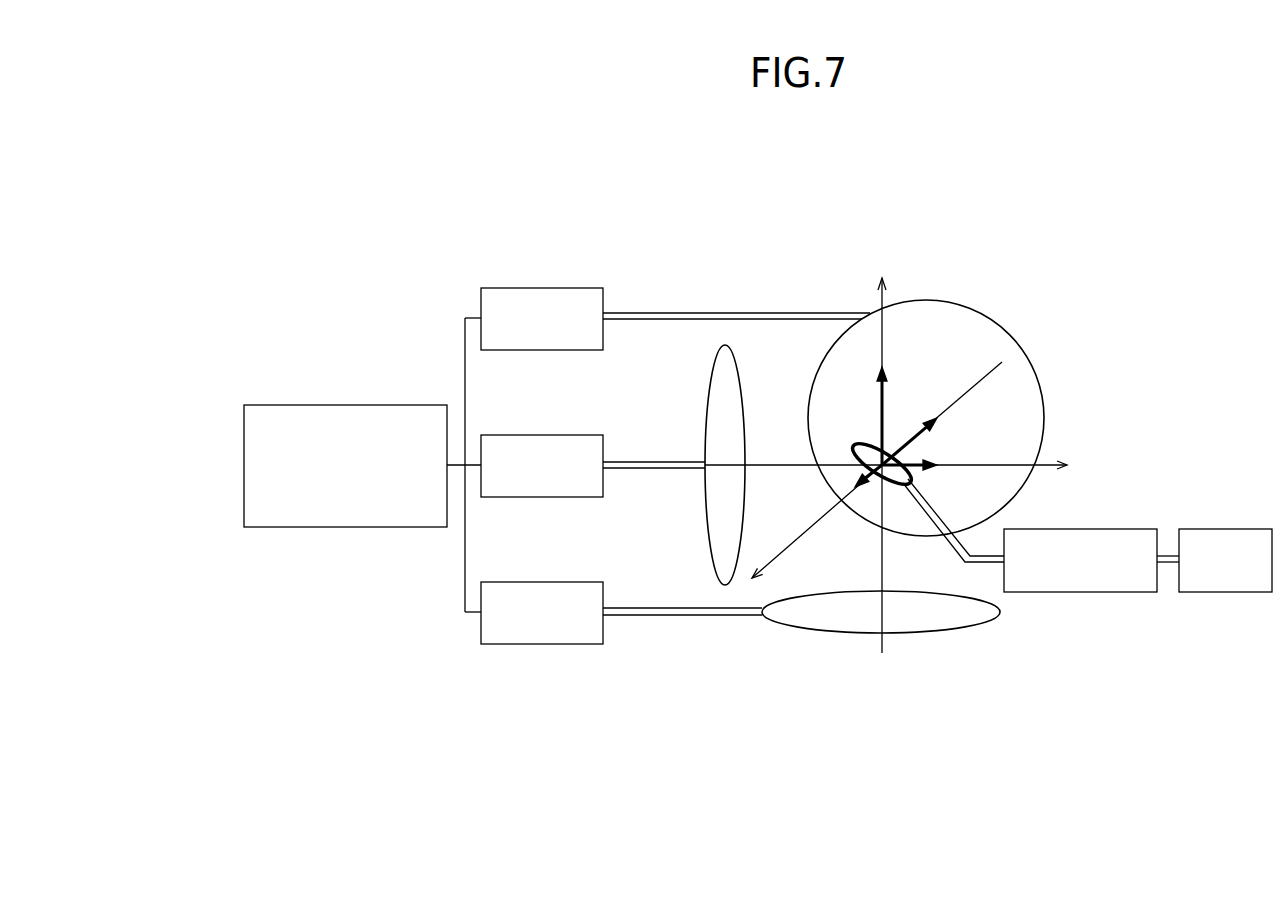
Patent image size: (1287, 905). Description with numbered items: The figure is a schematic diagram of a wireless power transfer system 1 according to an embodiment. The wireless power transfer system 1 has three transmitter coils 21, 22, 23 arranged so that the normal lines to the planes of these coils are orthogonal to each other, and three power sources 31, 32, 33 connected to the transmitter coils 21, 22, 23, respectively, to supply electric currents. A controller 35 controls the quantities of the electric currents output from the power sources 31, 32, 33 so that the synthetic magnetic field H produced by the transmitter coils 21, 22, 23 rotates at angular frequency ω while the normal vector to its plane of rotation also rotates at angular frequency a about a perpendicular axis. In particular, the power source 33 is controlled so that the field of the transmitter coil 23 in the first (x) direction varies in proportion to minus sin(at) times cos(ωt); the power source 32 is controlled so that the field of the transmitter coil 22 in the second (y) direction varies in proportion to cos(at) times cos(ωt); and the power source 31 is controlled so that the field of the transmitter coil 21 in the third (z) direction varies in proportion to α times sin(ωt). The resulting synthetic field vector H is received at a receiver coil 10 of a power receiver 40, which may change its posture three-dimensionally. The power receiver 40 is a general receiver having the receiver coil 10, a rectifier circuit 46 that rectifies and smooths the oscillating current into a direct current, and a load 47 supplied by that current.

The wireless power transfer system 1 is at (1223, 242).
The receiver coil 10 is at (913, 477).
The transmitter coil 21 is at (908, 633).
The transmitter coil 22 is at (742, 378).
The transmitter coil 23 is at (927, 300).
The power source 31 is at (540, 582).
The power source 32 is at (540, 435).
The power source 33 is at (536, 350).
The controller 35 is at (372, 405).
The power receiver 40 is at (1078, 496).
The rectifier circuit 46 is at (1115, 529).
The load 47 is at (1198, 529).